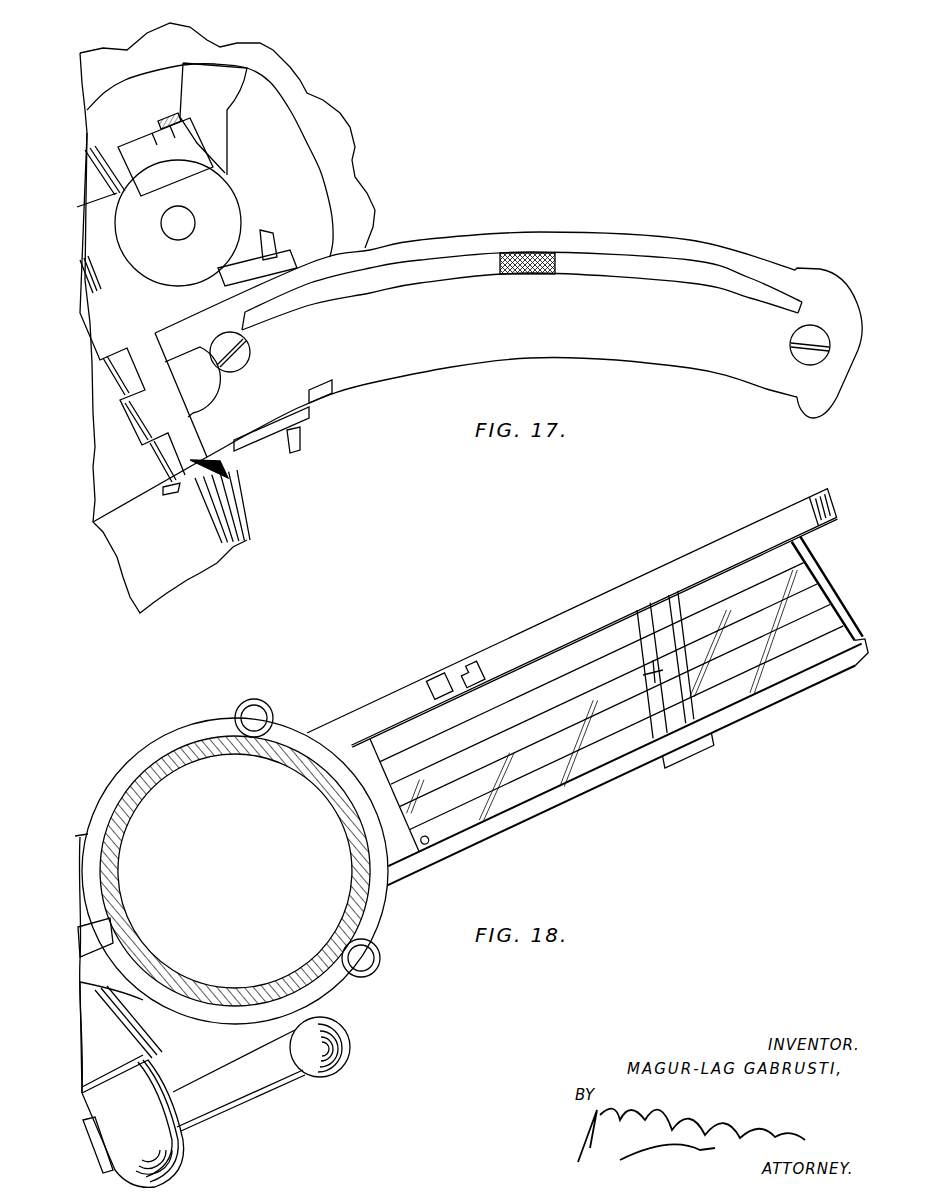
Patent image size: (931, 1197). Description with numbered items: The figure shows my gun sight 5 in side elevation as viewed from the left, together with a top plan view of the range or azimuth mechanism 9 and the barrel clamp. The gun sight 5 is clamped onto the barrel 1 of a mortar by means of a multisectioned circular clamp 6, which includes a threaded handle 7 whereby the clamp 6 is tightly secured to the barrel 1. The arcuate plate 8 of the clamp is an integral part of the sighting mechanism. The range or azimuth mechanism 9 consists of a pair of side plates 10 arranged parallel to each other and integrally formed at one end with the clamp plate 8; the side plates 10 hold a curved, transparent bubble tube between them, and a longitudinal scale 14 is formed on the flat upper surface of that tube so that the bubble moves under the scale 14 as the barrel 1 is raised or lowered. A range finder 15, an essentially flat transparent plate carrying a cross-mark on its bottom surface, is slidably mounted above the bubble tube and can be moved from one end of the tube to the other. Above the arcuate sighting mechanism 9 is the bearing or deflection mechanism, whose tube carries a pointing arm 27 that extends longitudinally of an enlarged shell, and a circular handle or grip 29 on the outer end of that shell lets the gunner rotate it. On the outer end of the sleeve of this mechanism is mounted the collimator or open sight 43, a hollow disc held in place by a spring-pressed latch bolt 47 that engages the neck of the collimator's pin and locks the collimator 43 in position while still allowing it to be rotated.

In FIG. 18, the barrel 1 is at (190, 990).
In FIG. 17, the gun sight 5 is at (411, 205).
In FIG. 18, the gun sight 5 is at (326, 709).
In FIG. 17, the multisectioned circular clamp 6 is at (142, 476).
In FIG. 18, the multisectioned circular clamp 6 is at (155, 750).
In FIG. 18, the threaded handle 7 is at (150, 1142).
In FIG. 17, the arcuate plate 8 is at (218, 470).
In FIG. 18, the arcuate plate 8 is at (375, 938).
In FIG. 17, the range or azimuth mechanism 9 is at (614, 233).
In FIG. 18, the range or azimuth mechanism 9 is at (553, 610).
In FIG. 17, the side plates 10 is at (432, 348).
In FIG. 18, the side plates 10 is at (410, 697).
In FIG. 18, the longitudinal scale 14 is at (497, 683).
In FIG. 17, the range finder 15 is at (529, 252).
In FIG. 18, the range finder 15 is at (631, 614).
In FIG. 17, the pointing arm 27 is at (222, 75).
In FIG. 17, the circular handle or grip 29 is at (190, 45).
In FIG. 17, the collimator or open sight 43 is at (225, 222).
In FIG. 17, the latch bolt 47 is at (165, 122).